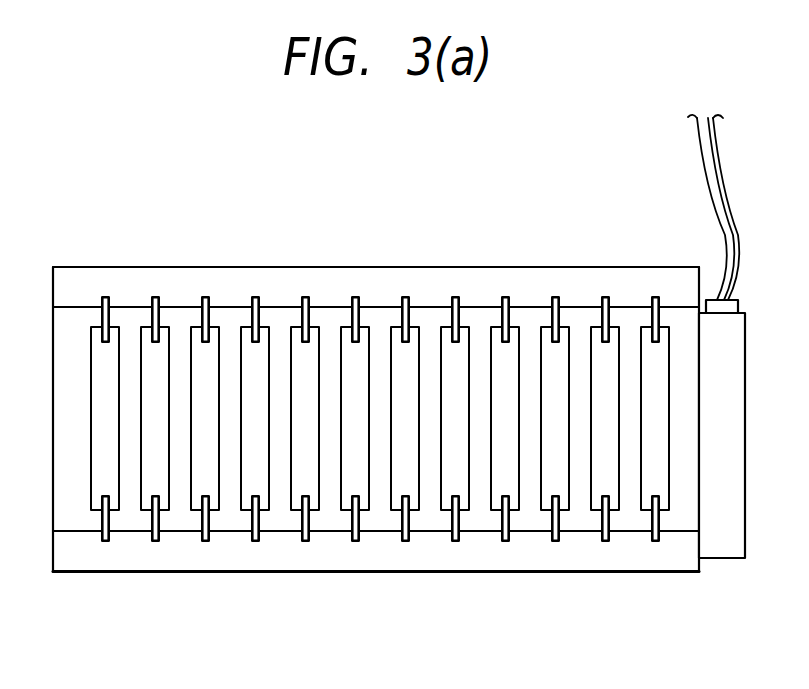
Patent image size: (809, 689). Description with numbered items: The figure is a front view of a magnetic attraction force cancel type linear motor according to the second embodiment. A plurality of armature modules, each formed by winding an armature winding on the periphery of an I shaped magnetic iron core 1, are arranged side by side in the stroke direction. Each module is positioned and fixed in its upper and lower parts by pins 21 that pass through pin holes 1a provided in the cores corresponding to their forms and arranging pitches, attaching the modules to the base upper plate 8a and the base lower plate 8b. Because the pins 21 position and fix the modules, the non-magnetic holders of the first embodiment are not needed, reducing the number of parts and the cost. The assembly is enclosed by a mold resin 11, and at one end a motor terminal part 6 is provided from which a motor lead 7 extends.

The I shaped magnetic iron core 1 is at (507, 365).
The pin hole 1a is at (503, 330).
The pin 21 is at (253, 297).
The base upper plate 8a is at (385, 277).
The base lower plate 8b is at (382, 553).
The mold resin 11 is at (181, 498).
The motor terminal part 6 is at (722, 547).
The motor lead 7 is at (715, 167).